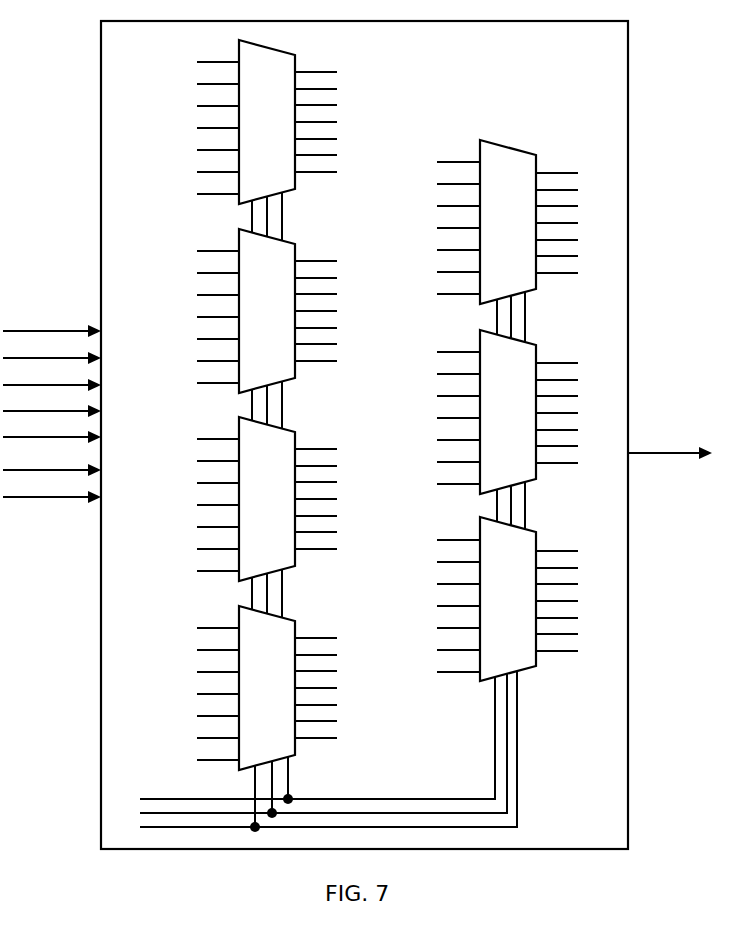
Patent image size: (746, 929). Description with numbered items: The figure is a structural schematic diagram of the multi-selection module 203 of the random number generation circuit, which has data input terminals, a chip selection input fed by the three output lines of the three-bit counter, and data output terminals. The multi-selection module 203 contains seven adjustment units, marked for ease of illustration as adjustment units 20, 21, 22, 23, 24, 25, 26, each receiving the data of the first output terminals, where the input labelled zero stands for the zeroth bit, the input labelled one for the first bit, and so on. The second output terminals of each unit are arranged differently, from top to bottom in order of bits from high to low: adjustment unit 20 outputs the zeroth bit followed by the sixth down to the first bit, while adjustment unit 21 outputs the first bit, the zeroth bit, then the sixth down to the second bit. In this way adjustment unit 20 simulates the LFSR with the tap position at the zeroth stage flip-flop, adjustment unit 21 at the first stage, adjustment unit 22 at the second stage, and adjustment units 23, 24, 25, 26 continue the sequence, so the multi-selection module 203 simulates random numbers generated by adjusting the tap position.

The multi-selection module 203 is at (91, 153).
The adjustment unit 20 is at (253, 132).
The adjustment unit 21 is at (253, 321).
The adjustment unit 22 is at (253, 509).
The adjustment unit 23 is at (253, 698).
The adjustment unit 24 is at (498, 232).
The adjustment unit 25 is at (498, 422).
The adjustment unit 26 is at (498, 609).